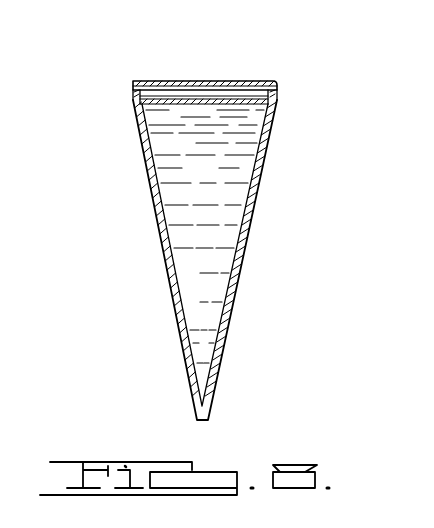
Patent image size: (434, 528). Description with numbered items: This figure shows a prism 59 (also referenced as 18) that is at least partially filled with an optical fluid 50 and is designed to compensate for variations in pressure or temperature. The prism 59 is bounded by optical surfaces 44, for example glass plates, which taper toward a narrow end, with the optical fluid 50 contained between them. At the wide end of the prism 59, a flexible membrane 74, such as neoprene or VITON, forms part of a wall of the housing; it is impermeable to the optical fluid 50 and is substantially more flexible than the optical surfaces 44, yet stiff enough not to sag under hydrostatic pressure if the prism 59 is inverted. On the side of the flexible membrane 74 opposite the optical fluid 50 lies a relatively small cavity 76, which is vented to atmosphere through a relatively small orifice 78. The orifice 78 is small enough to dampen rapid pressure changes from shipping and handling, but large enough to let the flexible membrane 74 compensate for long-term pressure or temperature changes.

The prism 59 is at (215, 216).
The cup 18 is at (215, 216).
The optical surfaces 44 is at (165, 262).
The optical fluid 50 is at (203, 345).
The cavity 76 is at (277, 90).
The orifice 78 is at (205, 84).
The flexible membrane 74 is at (177, 103).